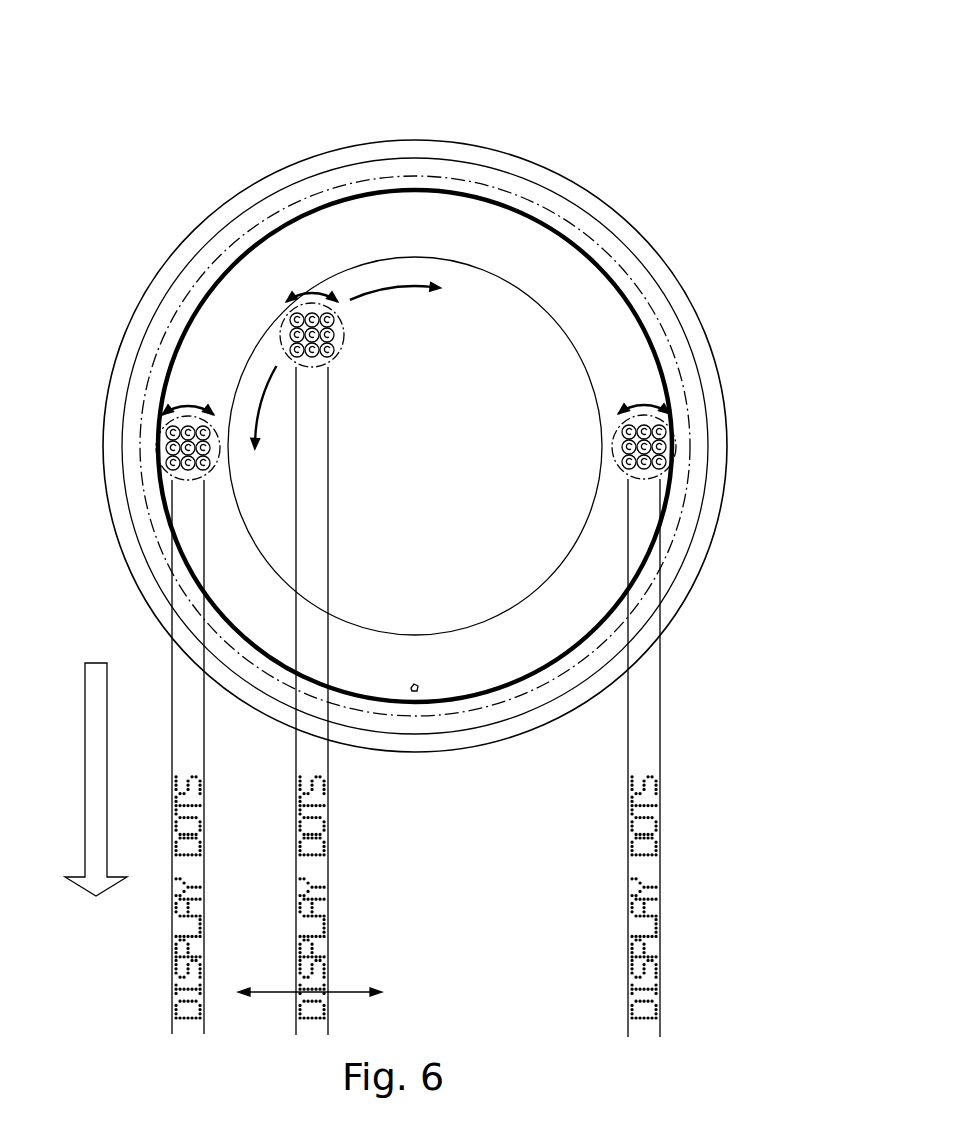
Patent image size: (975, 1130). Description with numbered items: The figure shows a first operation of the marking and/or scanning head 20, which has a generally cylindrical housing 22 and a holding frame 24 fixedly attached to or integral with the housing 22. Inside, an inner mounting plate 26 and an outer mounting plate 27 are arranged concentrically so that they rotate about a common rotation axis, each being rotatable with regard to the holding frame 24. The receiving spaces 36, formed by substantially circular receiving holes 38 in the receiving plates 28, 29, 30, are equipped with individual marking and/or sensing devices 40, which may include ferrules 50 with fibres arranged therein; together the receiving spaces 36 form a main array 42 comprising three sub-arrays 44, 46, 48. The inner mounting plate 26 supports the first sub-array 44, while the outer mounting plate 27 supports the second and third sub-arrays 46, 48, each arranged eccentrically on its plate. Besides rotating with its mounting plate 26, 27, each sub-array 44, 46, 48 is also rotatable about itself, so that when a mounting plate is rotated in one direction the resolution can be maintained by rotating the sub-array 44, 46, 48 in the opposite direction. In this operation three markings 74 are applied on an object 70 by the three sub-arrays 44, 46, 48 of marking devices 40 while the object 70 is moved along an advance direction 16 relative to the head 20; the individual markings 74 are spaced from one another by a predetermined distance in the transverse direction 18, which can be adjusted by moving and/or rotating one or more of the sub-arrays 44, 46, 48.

The marking and/or scanning head 20 is at (415, 381).
The housing 22 is at (393, 150).
The holding frame 24 is at (461, 172).
The outer mounting plate 27 is at (318, 228).
The main array 42 is at (522, 203).
The inner mounting plate 26 is at (555, 375).
The first sub-array 44 is at (273, 331).
The second sub-array 46 is at (165, 480).
The third sub-array 48 is at (670, 477).
The marking and/or sensing devices 40 is at (417, 405).
The ferrules 50 is at (412, 405).
The receiving plate 28 is at (313, 364).
The receiving plate 29 is at (160, 465).
The receiving plate 30 is at (684, 440).
The receiving spaces 36 is at (705, 758).
The receiving holes 38 is at (638, 480).
The markings 74 is at (477, 702).
The advance direction 16 is at (103, 757).
The transverse direction 18 is at (277, 990).
The object 70 is at (488, 897).